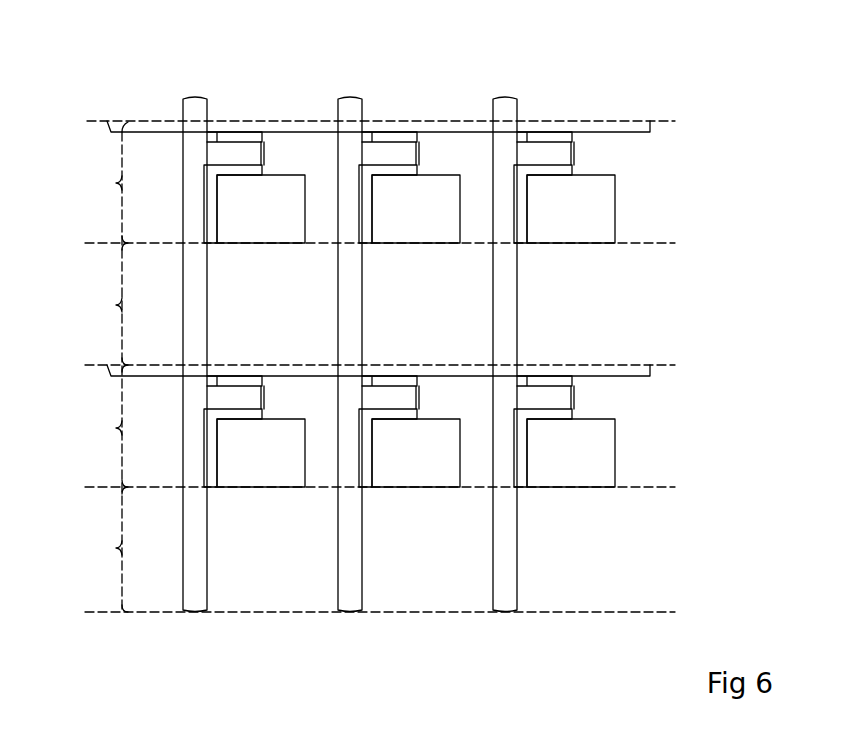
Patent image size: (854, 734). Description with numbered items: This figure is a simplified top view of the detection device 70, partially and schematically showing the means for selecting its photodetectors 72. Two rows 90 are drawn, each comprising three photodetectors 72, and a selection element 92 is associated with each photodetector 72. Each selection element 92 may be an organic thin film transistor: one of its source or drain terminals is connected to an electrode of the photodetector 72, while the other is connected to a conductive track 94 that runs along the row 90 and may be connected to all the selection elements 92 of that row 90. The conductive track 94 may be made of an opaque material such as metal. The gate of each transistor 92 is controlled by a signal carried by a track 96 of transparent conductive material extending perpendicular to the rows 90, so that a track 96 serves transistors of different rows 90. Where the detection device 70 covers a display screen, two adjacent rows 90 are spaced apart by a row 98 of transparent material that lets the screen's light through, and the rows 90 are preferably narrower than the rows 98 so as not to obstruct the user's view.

The detection device 70 is at (606, 50).
The photodetector 72 is at (267, 193).
The row 90 is at (105, 306).
The selection element 92 is at (262, 137).
The conductive track 94 is at (153, 128).
The track 96 is at (197, 106).
The row of transparent material 98 is at (105, 427).